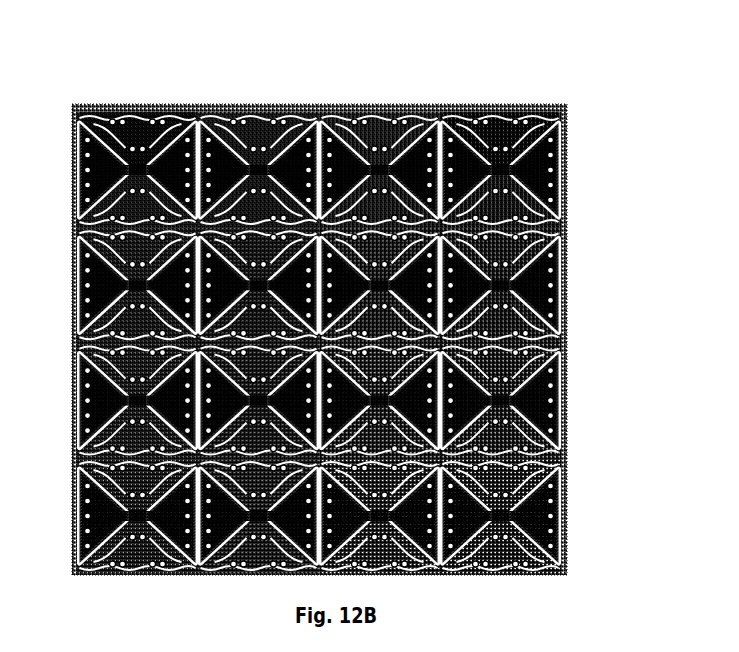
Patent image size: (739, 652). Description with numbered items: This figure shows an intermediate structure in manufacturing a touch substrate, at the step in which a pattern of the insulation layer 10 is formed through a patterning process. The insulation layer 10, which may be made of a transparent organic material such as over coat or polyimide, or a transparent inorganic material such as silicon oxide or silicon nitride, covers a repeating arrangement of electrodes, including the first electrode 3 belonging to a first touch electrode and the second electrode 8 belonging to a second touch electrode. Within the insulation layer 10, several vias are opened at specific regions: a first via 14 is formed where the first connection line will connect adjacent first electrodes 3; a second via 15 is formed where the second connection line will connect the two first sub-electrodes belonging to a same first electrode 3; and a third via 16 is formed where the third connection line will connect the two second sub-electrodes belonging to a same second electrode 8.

The insulation layer 10 is at (333, 306).
The first electrode 3 is at (512, 122).
The second electrode 8 is at (465, 151).
The first via 14 is at (130, 129).
The second via 15 is at (97, 208).
The third via 16 is at (194, 126).